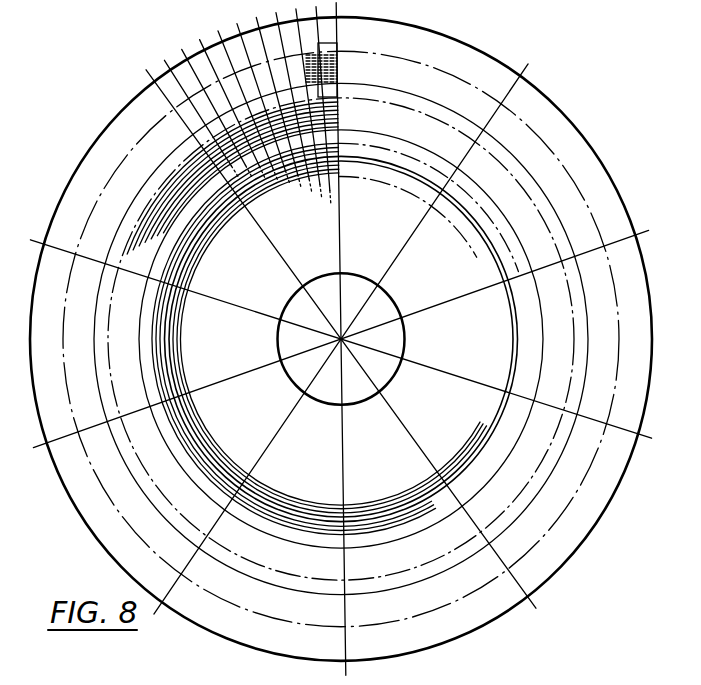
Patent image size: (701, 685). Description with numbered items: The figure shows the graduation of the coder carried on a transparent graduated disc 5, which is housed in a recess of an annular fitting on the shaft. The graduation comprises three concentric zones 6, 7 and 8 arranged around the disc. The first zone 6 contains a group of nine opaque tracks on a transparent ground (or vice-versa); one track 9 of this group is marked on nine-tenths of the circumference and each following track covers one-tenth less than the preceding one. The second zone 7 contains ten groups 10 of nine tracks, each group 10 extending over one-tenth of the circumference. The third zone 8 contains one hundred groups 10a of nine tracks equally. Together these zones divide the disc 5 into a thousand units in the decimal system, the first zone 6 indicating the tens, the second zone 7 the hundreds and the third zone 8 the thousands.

The transparent graduated disc 5 is at (572, 137).
The first zone 6 is at (343, 143).
The second zone 7 is at (343, 98).
The third zone 8 is at (343, 52).
The track 9 is at (465, 213).
The group of nine tracks 10 is at (121, 253).
The group of nine tracks 10a is at (334, 46).